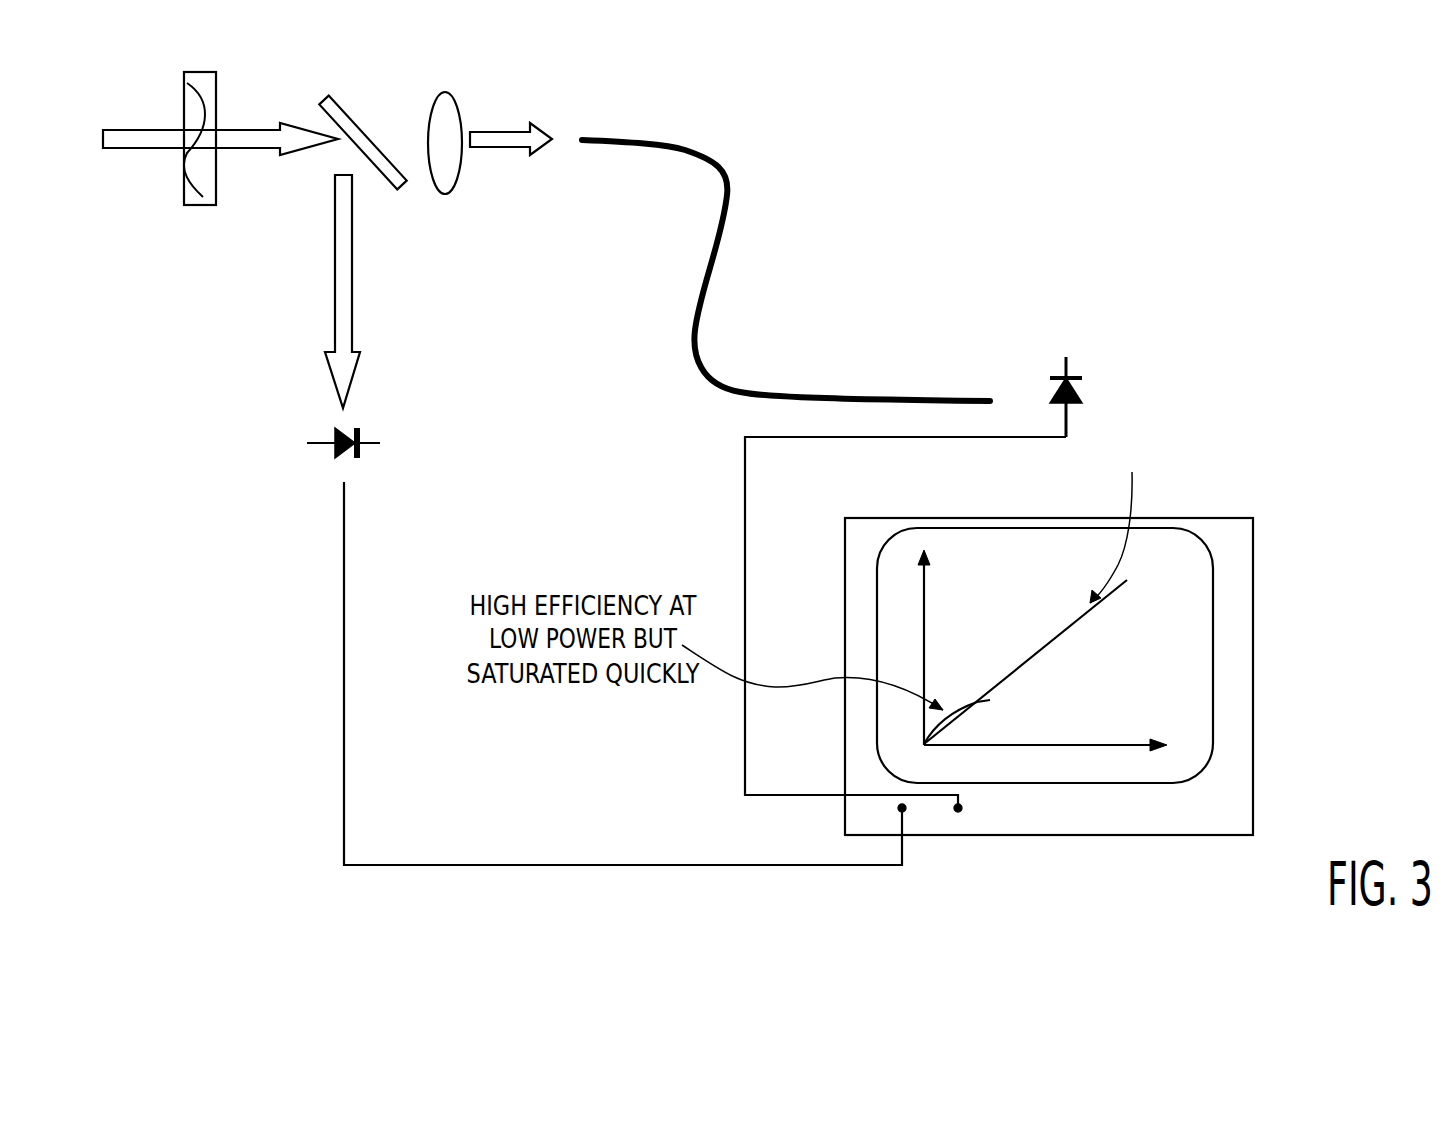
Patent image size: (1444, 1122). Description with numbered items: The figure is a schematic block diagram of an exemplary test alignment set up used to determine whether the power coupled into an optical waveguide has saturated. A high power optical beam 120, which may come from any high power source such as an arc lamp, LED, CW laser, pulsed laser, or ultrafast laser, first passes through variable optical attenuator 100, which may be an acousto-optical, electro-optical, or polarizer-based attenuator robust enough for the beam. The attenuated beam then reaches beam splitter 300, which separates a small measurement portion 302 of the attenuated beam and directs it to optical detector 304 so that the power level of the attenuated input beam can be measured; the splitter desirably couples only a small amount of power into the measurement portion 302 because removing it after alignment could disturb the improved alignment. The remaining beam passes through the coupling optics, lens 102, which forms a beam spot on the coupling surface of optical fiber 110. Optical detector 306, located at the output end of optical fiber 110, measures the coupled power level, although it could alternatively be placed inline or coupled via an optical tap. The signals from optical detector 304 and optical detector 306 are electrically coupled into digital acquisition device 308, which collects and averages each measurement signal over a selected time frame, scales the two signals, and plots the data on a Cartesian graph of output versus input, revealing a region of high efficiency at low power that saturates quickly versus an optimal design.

The variable optical attenuator 100 is at (216, 87).
The lens 102 is at (447, 195).
The optical fiber 110 is at (695, 342).
The high power optical beam 120 is at (140, 142).
The beam splitter 300 is at (353, 123).
The measurement portion 302 is at (335, 274).
The optical detector 304 is at (335, 451).
The optical detector 306 is at (1065, 377).
The digital acquisition device (DAQ) 308 is at (1255, 557).